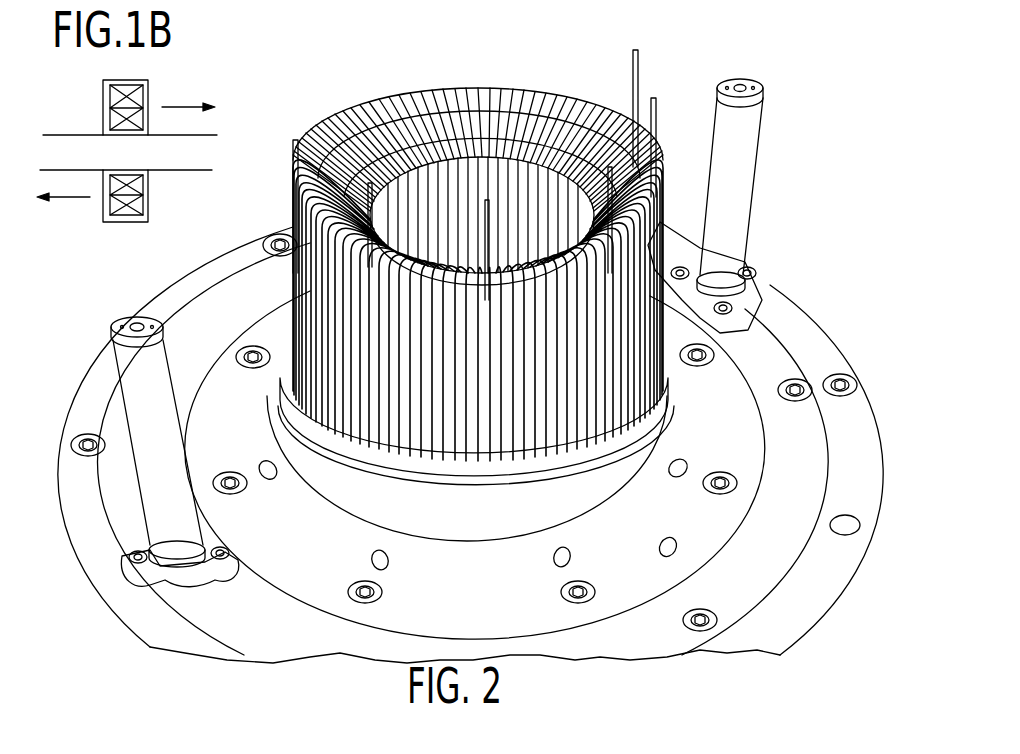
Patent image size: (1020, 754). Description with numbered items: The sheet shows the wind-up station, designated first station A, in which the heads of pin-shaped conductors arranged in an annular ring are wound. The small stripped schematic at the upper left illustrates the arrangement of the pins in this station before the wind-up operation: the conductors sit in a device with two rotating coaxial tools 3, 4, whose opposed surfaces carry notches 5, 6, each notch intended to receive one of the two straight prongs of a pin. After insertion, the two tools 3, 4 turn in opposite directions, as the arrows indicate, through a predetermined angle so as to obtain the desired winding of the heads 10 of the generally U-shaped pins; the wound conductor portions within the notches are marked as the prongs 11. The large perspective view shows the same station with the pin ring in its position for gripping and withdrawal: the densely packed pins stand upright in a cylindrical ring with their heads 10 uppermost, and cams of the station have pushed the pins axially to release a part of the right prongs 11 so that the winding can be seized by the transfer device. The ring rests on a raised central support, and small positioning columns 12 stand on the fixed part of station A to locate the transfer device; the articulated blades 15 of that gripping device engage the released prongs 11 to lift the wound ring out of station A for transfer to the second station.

In FIG. 1B, the rotating coaxial tool 3 is at (103, 110).
In FIG. 1B, the rotating coaxial tool 4 is at (90, 207).
In FIG. 1B, the notch 5 is at (130, 81).
In FIG. 1B, the notch 6 is at (130, 222).
In FIG. 1B, the right prongs 11 is at (145, 107).
In FIG. 2, the right prongs 11 is at (380, 397).
In FIG. 2, the heads of the pins 10 is at (476, 301).
In FIG. 2, the positioning columns 12 is at (160, 477).
In FIG. 2, the articulated blades 15 is at (360, 388).
In FIG. 2, the first station A is at (793, 281).